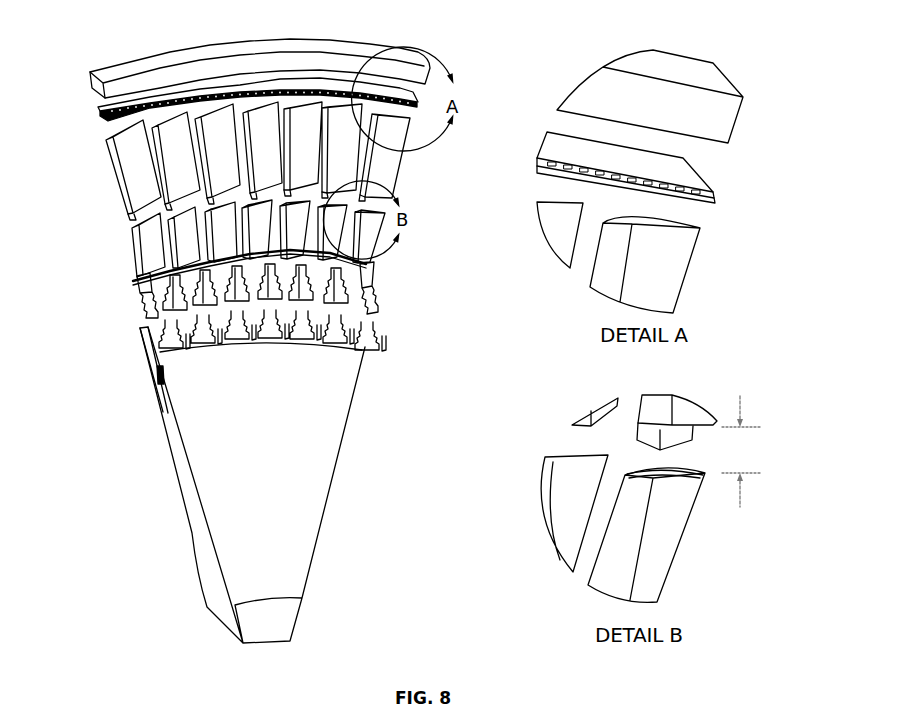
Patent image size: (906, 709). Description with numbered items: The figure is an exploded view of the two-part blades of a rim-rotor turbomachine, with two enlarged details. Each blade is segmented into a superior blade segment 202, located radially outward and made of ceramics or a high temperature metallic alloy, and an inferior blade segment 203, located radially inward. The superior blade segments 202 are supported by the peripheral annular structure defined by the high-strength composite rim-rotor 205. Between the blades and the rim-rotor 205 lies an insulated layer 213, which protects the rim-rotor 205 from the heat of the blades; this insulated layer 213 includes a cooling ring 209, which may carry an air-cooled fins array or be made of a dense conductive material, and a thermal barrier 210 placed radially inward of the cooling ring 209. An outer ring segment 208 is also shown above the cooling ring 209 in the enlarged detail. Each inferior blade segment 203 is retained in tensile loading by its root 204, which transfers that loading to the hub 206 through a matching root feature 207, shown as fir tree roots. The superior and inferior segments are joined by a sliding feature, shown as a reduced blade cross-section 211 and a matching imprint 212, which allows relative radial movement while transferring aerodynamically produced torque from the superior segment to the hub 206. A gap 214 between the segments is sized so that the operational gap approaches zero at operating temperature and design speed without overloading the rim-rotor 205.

The superior blade segment 202 is at (118, 165).
The inferior blade segment 203 is at (142, 252).
The root 204 is at (157, 295).
The rim-rotor 205 is at (108, 76).
The hub 206 is at (186, 471).
The matching root feature 207 is at (158, 372).
The shroud block 208 is at (690, 100).
The cooling ring 209 is at (714, 193).
The thermal barrier 210 is at (716, 203).
The reduced blade cross-section 211 is at (678, 432).
The matching imprint 212 is at (638, 475).
The insulated layer 213 is at (95, 100).
The gap 214 is at (742, 451).